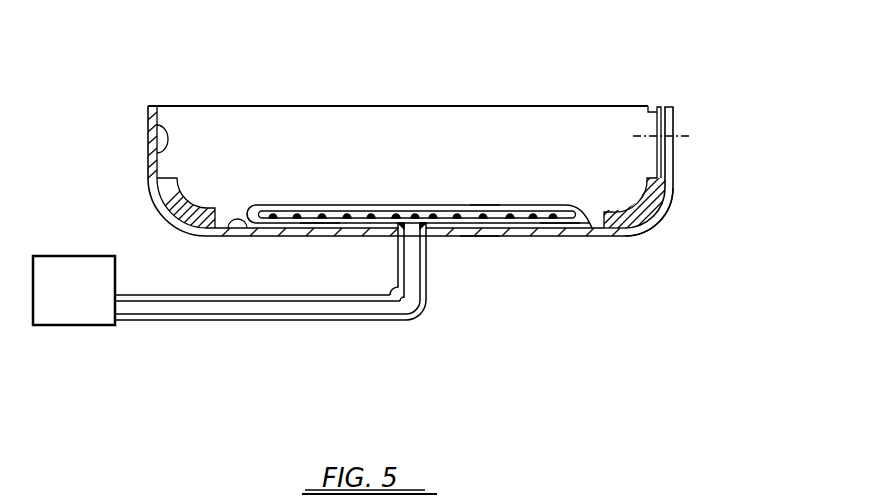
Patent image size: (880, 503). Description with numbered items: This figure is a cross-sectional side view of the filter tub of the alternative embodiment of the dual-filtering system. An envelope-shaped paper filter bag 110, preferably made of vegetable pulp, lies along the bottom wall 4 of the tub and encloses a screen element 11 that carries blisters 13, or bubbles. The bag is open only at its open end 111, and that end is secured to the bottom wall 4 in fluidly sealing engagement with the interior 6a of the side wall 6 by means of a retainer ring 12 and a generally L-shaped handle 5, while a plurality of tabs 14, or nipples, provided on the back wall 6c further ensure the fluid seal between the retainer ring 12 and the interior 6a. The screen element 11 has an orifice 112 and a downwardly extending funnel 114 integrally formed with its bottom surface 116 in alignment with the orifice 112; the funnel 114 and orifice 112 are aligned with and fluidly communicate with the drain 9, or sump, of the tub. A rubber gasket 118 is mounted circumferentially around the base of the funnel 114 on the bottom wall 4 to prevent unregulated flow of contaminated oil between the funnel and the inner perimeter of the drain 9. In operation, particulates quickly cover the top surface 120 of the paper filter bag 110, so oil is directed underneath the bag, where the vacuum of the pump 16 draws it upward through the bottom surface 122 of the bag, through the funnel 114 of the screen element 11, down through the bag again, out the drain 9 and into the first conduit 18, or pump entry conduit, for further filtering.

The bottom wall 4 is at (245, 236).
The handle 5 is at (648, 106).
The side wall 6 is at (676, 153).
The interior of side wall 6a is at (664, 210).
The back wall 6c is at (150, 123).
The drain 9 is at (424, 238).
The screen element 11 is at (422, 227).
The retainer ring 12 is at (167, 204).
The blisters 13 is at (533, 213).
The tabs 14 is at (155, 171).
The pump 16 is at (60, 310).
The first conduit 18 is at (200, 320).
The paper filter bag 110 is at (263, 204).
The open end 111 is at (612, 233).
The orifice 112 is at (483, 203).
The funnel 114 is at (413, 227).
The bottom surface 116 is at (320, 222).
The gasket 118 is at (483, 237).
The top surface 120 is at (333, 205).
The bottom surface 122 is at (548, 224).